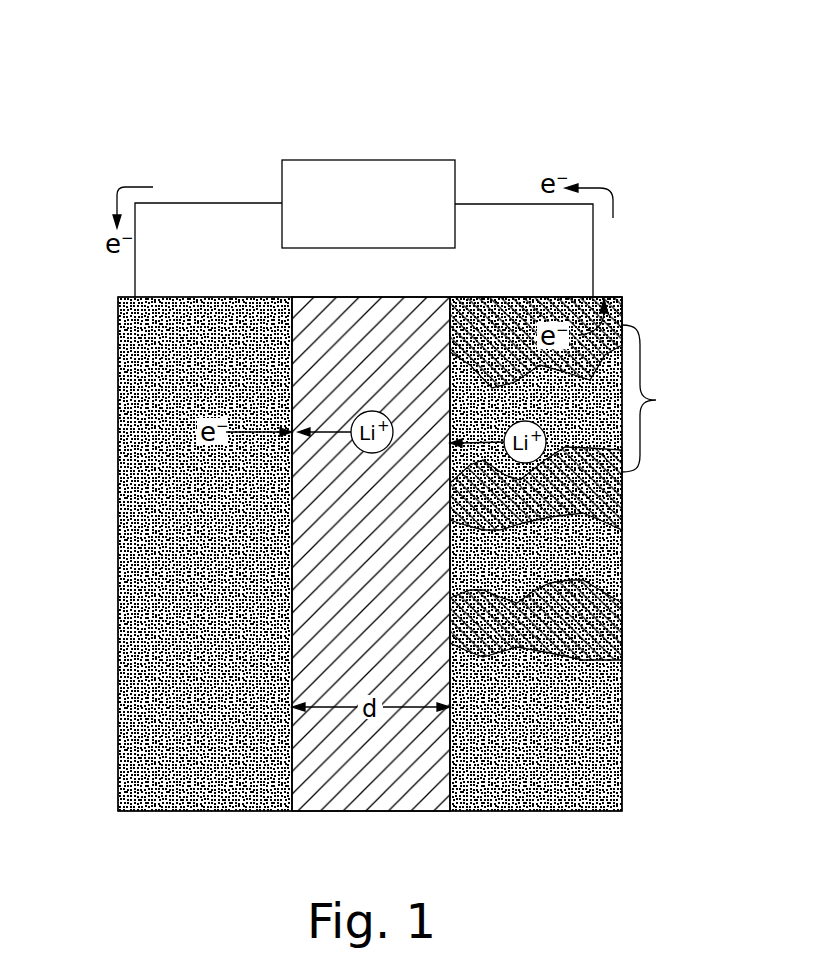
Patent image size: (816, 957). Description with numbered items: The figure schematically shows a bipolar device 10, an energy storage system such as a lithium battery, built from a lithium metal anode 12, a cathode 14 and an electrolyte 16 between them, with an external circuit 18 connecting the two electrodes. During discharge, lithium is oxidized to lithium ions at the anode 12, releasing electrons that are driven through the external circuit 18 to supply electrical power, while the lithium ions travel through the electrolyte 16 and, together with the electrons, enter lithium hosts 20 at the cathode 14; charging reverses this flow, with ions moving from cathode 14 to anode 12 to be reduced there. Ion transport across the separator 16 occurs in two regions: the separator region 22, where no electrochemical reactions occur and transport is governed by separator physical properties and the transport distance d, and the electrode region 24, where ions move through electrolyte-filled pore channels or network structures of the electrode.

The bipolar device 10 is at (165, 125).
The lithium metal anode 12 is at (163, 811).
The cathode 14 is at (537, 811).
The electrolyte 16 is at (350, 811).
The external circuit 18 is at (430, 160).
The lithium hosts 20 is at (660, 398).
The separator region 22 is at (386, 641).
The electrode region 24 is at (568, 412).